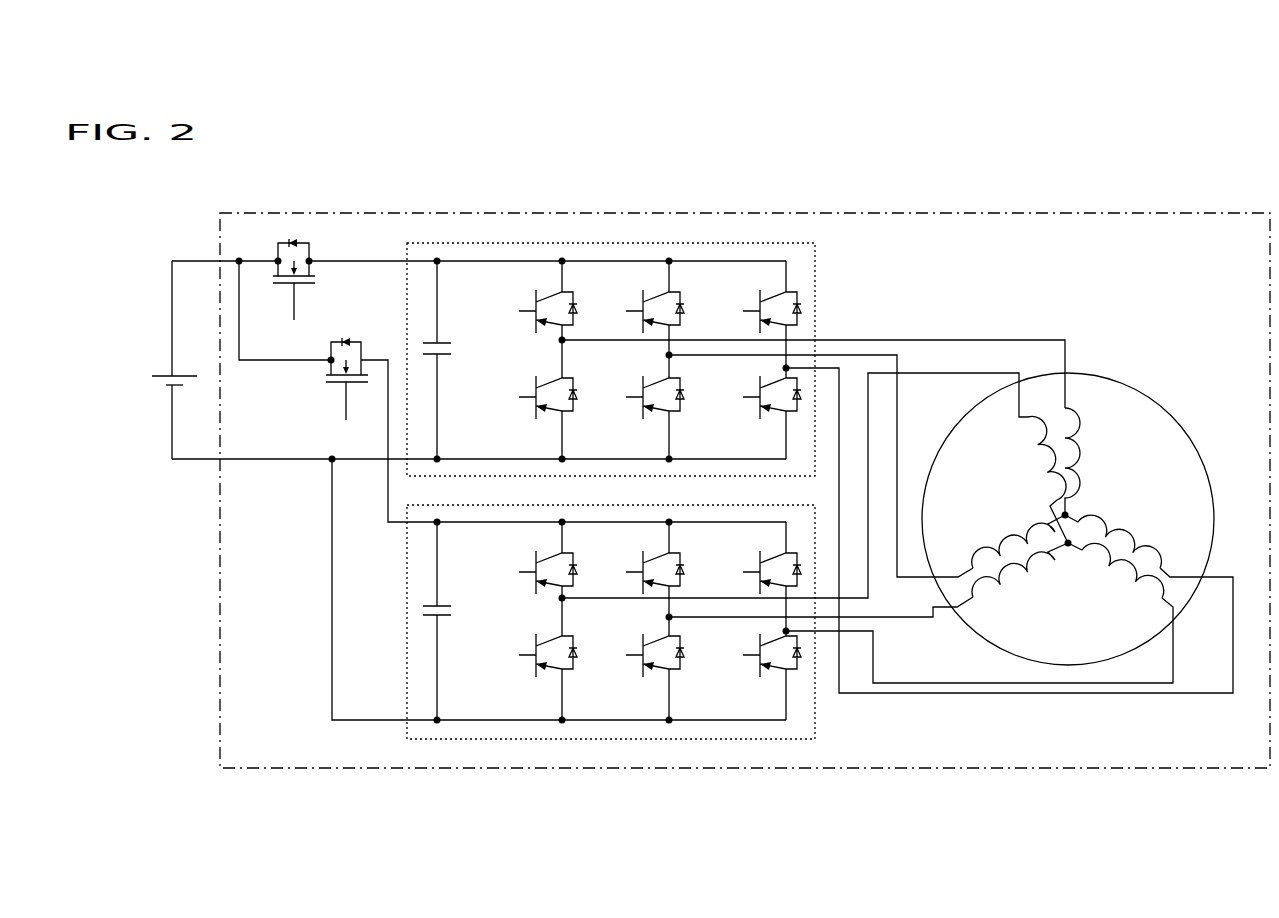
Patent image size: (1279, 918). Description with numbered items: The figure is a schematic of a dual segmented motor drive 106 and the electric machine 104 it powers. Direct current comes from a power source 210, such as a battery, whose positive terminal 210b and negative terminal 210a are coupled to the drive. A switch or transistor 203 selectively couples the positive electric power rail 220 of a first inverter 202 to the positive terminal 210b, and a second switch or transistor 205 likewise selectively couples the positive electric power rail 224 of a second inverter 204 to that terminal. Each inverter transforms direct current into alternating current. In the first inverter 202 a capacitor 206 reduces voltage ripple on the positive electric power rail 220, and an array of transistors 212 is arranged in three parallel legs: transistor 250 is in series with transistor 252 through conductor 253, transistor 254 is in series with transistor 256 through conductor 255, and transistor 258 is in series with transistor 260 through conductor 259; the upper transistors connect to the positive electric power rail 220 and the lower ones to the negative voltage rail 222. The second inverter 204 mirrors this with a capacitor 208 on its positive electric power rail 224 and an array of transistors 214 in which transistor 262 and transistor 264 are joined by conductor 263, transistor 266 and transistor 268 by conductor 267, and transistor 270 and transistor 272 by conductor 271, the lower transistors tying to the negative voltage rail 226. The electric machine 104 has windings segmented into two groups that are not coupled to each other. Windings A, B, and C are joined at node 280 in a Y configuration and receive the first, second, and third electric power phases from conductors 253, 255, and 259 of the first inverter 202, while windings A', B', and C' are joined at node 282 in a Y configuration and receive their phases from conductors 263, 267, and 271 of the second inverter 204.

The electric machine 104 is at (1160, 405).
The dual segmented motor drive 106 is at (845, 213).
The first inverter 202 is at (815, 243).
The second inverter 204 is at (815, 739).
The switch or transistor 203 is at (317, 248).
The switch or transistor 205 is at (346, 335).
The capacitor 206 is at (442, 336).
The capacitor 208 is at (442, 598).
The power source 210 is at (158, 370).
The negative terminal 210a is at (169, 386).
The positive terminal 210b is at (160, 370).
The array of transistors 212 is at (526, 312).
The array of transistors 214 is at (519, 574).
The positive electric power rail 220 is at (573, 262).
The negative voltage rail 222 is at (585, 459).
The positive electric power rail 224 is at (573, 523).
The negative voltage rail 226 is at (590, 720).
The transistor 250 is at (533, 322).
The transistor 252 is at (532, 406).
The conductor 253 is at (564, 357).
The transistor 254 is at (643, 319).
The conductor 255 is at (669, 355).
The transistor 256 is at (643, 406).
The transistor 258 is at (760, 319).
The conductor 259 is at (786, 368).
The transistor 260 is at (760, 405).
The transistor 262 is at (533, 583).
The conductor 263 is at (564, 620).
The transistor 264 is at (532, 665).
The transistor 266 is at (643, 580).
The conductor 267 is at (669, 617).
The transistor 268 is at (643, 665).
The transistor 270 is at (760, 581).
The conductor 271 is at (786, 631).
The transistor 272 is at (760, 669).
The node 280 is at (1069, 511).
The node 282 is at (1068, 548).
The winding A is at (1076, 428).
The winding A' is at (1029, 472).
The winding B is at (1001, 544).
The winding B' is at (1020, 591).
The winding C is at (1148, 544).
The winding C' is at (1116, 585).